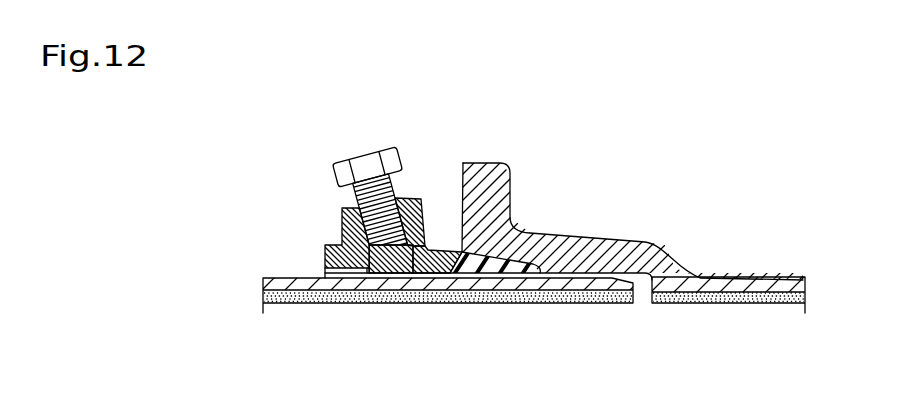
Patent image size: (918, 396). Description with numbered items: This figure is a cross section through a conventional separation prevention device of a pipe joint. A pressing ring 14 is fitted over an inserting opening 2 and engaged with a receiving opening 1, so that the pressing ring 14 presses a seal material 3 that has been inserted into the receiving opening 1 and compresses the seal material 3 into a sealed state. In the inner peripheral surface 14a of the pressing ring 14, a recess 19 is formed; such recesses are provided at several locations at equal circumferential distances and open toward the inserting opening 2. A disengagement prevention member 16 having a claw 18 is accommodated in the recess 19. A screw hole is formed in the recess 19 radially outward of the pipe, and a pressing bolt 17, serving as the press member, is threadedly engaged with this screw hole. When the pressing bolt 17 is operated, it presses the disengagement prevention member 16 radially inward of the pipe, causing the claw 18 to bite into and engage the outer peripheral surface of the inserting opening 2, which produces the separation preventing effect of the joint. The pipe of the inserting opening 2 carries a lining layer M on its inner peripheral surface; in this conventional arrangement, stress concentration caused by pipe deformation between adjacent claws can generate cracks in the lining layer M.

The receiving opening 1 is at (598, 246).
The inserting opening 2 is at (272, 276).
The seal material 3 is at (507, 280).
The pressing ring 14 is at (343, 219).
The inner peripheral surface 14a is at (340, 272).
The disengagement prevention member 16 is at (425, 243).
The pressing bolt 17 is at (371, 152).
The claw 18 is at (400, 275).
The recess 19 is at (367, 273).
The lining layer M is at (578, 303).